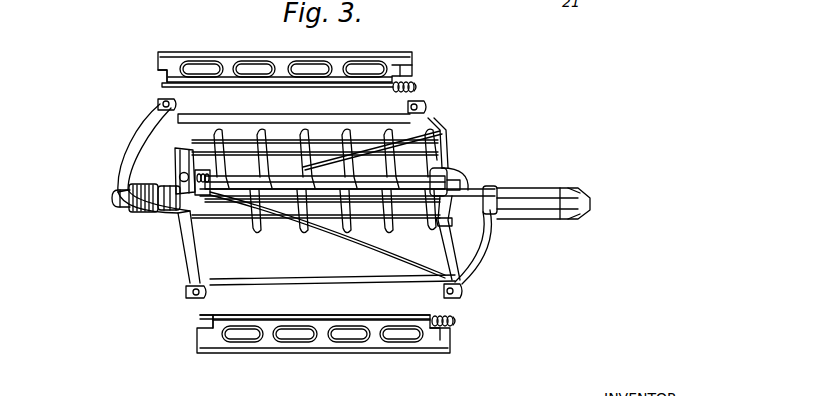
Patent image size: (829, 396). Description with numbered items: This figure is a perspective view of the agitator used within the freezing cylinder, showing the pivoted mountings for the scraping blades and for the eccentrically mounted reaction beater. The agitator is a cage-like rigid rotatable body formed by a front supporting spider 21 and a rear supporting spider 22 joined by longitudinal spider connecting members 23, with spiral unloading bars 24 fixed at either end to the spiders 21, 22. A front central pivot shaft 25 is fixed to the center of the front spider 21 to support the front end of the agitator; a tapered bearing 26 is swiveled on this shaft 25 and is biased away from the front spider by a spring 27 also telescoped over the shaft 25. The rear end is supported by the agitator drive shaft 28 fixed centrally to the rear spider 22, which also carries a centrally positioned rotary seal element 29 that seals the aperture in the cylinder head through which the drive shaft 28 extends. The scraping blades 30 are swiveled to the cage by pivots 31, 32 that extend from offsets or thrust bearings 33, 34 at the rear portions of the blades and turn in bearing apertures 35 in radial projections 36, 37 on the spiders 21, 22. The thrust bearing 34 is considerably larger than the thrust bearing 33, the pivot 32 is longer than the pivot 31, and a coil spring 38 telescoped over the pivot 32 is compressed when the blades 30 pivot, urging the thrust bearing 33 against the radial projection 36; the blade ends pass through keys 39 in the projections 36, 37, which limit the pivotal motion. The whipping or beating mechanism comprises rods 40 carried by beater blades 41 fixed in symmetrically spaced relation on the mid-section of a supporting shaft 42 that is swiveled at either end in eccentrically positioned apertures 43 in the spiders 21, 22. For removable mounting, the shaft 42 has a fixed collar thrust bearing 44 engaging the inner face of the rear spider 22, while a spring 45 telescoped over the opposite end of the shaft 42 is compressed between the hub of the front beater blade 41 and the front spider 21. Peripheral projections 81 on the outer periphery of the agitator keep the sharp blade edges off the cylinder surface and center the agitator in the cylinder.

The front supporting spider 21 is at (128, 175).
The rear supporting spider 22 is at (482, 255).
The longitudinal spider connecting members 23 is at (303, 118).
The spiral unloading bars 24 is at (358, 136).
The front central pivot shaft 25 is at (113, 199).
The tapered bearing 26 is at (158, 213).
The spring 27 is at (178, 213).
The agitator drive shaft 28 is at (548, 190).
The rotary seal element 29 is at (456, 226).
The scraping blades 30 is at (283, 61).
The pivot 31 is at (163, 85).
The pivot 32 is at (410, 84).
The offset or thrust bearing 33 is at (168, 76).
The offset or thrust bearing 34 is at (402, 74).
The bearing apertures 35 is at (160, 107).
The radial projection 36 is at (162, 104).
The radial projection 37 is at (408, 108).
The coil spring 38 is at (416, 87).
The keys 39 is at (176, 106).
The rods 40 is at (430, 131).
The beater blades 41 is at (258, 228).
The supporting shaft 42 is at (446, 152).
The eccentrically positioned apertures 43 is at (179, 176).
The fixed collar thrust bearing 44 is at (448, 178).
The spring 45 is at (176, 152).
The peripheral projections 81 is at (118, 210).